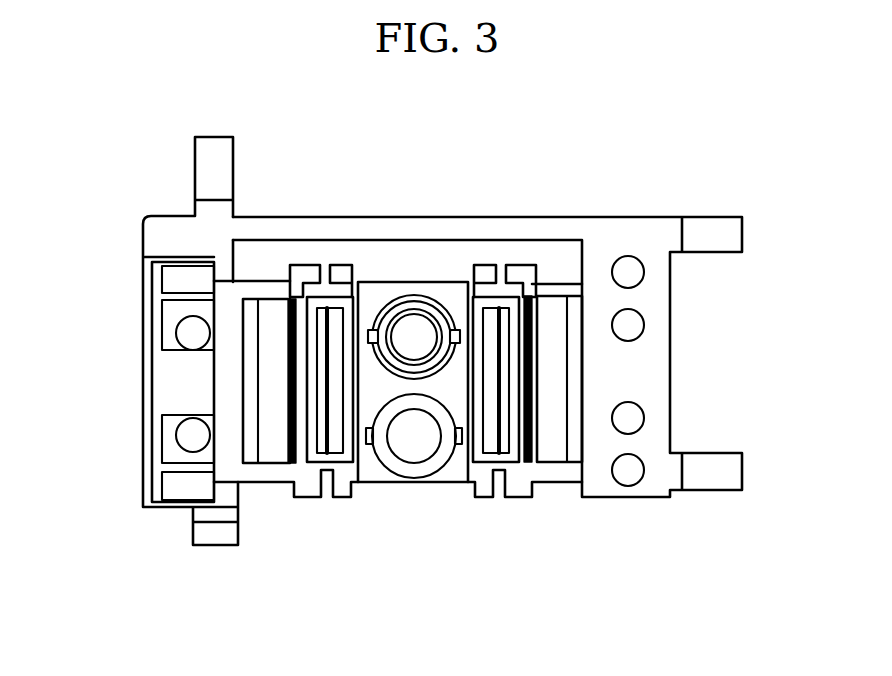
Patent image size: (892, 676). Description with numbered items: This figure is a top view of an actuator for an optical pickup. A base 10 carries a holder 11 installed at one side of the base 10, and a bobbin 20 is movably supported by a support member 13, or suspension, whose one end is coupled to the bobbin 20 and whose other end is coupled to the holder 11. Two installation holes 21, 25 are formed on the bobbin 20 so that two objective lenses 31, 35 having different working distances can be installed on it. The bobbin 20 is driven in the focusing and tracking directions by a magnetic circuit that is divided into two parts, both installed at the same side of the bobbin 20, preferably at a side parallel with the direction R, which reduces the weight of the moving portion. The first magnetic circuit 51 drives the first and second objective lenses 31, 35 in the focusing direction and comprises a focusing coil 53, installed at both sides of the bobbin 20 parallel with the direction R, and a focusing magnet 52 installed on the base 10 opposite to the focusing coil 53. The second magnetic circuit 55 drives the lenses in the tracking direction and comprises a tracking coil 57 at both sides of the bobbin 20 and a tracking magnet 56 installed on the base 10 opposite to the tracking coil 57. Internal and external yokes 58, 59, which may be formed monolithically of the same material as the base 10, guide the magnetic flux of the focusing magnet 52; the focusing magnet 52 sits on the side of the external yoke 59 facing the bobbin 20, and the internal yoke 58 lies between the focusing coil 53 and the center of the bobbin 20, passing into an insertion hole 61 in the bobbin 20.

The base 10 is at (428, 250).
The holder 11 is at (167, 387).
The support member 13 is at (326, 500).
The bobbin 20 is at (453, 482).
The installation hole 21 is at (405, 300).
The installation hole 25 is at (382, 470).
The first objective lens 31 is at (422, 325).
The second objective lens 35 is at (410, 450).
The first magnetic circuit 51 is at (394, 466).
The focusing magnet 52 is at (265, 465).
The focusing coil 53 is at (292, 468).
The second magnetic circuit 55 is at (513, 330).
The tracking magnet 56 is at (330, 300).
The tracking coil 57 is at (355, 330).
The internal yoke 58 is at (540, 356).
The external yoke 59 is at (560, 306).
The insertion hole 61 is at (312, 300).